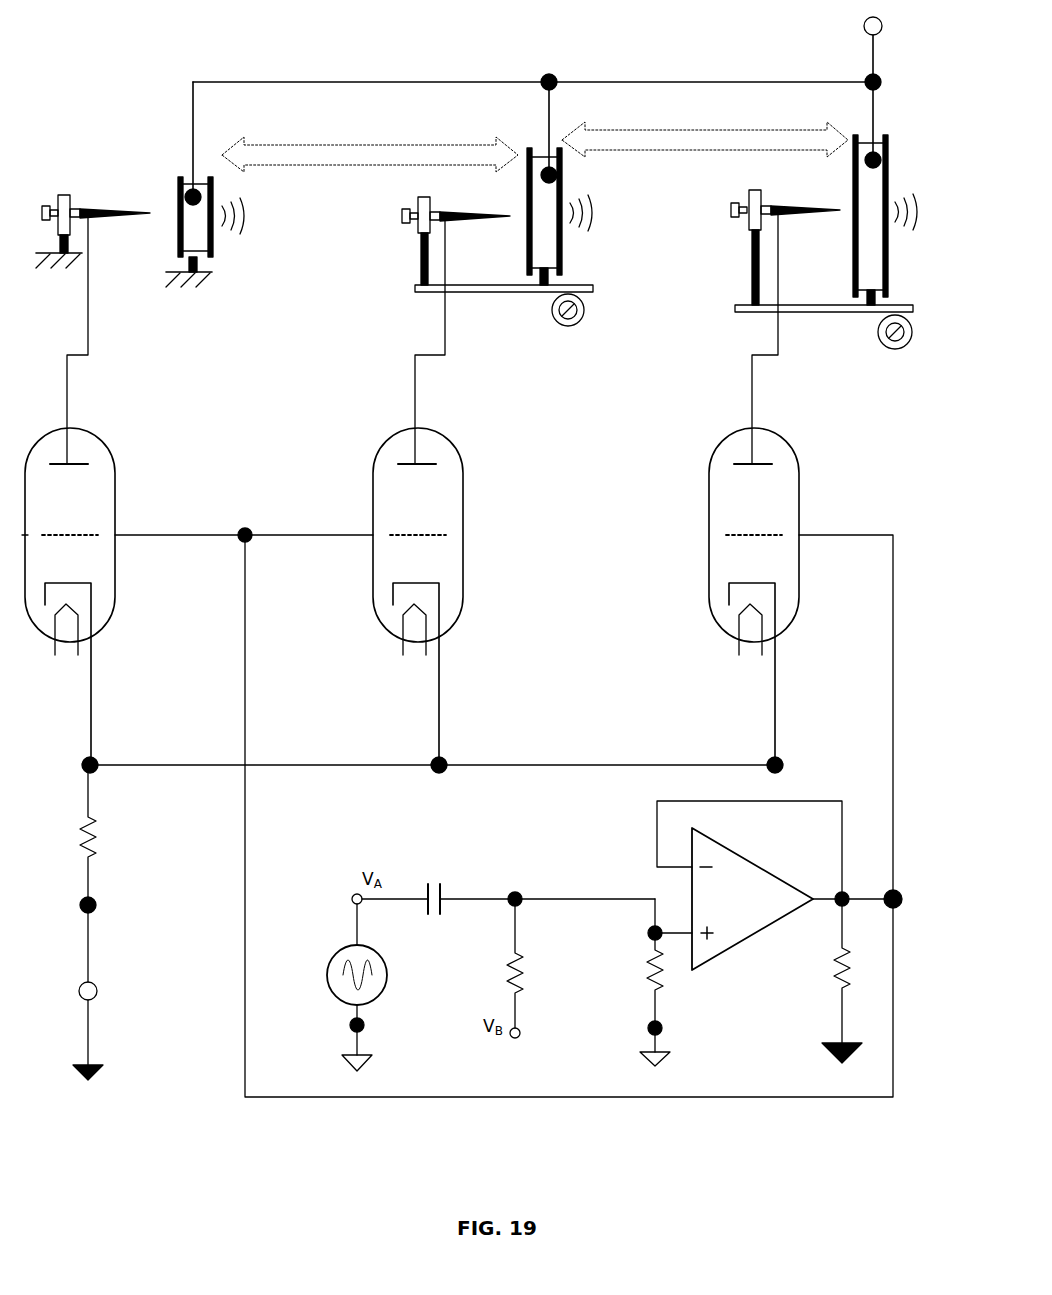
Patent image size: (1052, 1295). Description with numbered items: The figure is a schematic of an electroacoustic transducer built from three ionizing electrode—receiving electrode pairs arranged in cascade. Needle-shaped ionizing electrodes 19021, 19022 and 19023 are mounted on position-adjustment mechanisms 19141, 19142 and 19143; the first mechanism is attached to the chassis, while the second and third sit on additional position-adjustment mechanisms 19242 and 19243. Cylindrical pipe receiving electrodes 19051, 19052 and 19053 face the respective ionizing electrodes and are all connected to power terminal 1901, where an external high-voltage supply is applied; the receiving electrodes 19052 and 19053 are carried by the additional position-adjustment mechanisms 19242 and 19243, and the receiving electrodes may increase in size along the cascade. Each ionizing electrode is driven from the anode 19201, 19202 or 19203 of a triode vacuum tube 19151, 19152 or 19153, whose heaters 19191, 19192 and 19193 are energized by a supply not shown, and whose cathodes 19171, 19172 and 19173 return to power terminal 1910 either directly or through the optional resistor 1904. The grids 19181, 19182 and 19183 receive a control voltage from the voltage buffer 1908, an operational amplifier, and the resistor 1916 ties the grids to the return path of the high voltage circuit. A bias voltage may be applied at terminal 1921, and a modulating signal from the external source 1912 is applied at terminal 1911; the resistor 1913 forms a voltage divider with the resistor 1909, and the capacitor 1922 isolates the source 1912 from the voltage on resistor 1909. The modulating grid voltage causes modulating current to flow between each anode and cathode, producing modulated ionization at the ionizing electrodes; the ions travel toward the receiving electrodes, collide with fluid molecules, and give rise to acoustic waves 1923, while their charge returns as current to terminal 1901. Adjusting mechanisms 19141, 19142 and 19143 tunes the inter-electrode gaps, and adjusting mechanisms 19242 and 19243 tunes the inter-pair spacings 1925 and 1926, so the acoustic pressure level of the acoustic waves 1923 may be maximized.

The power terminal 1901 is at (864, 28).
The optional resistor 1904 is at (98, 845).
The voltage buffer 1908 is at (700, 963).
The resistor 1909 is at (648, 966).
The power terminal 1910 is at (98, 992).
The terminal 1911 is at (353, 894).
The external source 1912 is at (328, 972).
The resistor 1913 is at (508, 968).
The resistor 1916 is at (835, 980).
The terminal 1921 is at (520, 1035).
The capacitor 1922 is at (443, 884).
The acoustic waves 1923 is at (246, 212).
The inter-pair spacing 1925 is at (422, 146).
The inter-pair spacing 1926 is at (760, 130).
The ionizing electrode 19021 is at (128, 172).
The ionizing electrode 19022 is at (490, 178).
The ionizing electrode 19023 is at (812, 170).
The receiving electrode 19051 is at (200, 250).
The receiving electrode 19052 is at (535, 262).
The receiving electrode 19053 is at (866, 292).
The position-adjustment mechanism 19141 is at (62, 194).
The position-adjustment mechanism 19142 is at (418, 230).
The position-adjustment mechanism 19143 is at (745, 223).
The triode vacuum tube 19151 is at (132, 578).
The triode vacuum tube 19152 is at (477, 578).
The triode vacuum tube 19153 is at (812, 578).
The cathode 19171 is at (78, 585).
The cathode 19172 is at (418, 585).
The cathode 19173 is at (757, 585).
The grid 19181 is at (90, 530).
The grid 19182 is at (435, 530).
The grid 19183 is at (770, 530).
The heater 19191 is at (70, 655).
The heater 19192 is at (418, 655).
The heater 19193 is at (752, 655).
The anode 19201 is at (73, 455).
The anode 19202 is at (421, 455).
The anode 19203 is at (757, 455).
The additional position-adjustment mechanism 19242 is at (592, 292).
The additional position-adjustment mechanism 19243 is at (740, 308).